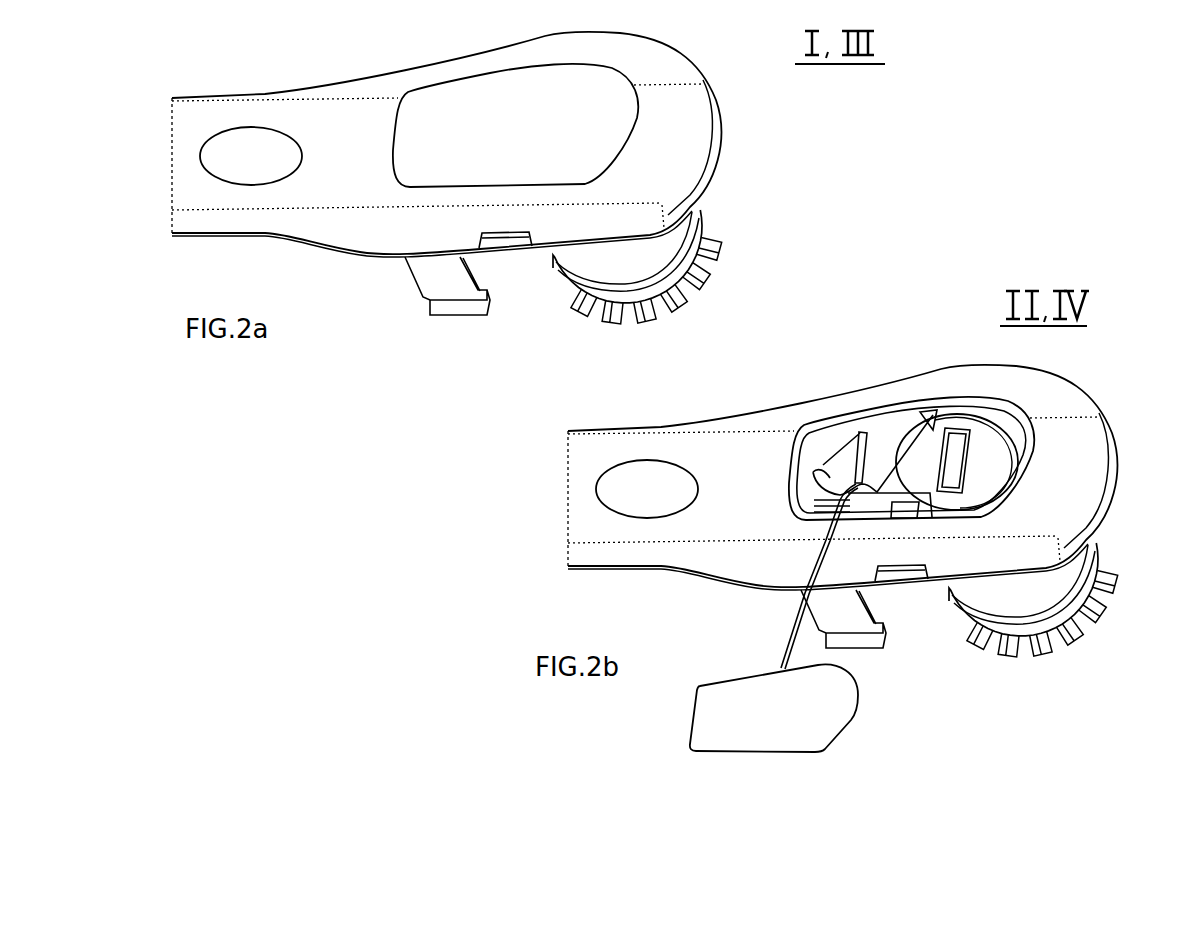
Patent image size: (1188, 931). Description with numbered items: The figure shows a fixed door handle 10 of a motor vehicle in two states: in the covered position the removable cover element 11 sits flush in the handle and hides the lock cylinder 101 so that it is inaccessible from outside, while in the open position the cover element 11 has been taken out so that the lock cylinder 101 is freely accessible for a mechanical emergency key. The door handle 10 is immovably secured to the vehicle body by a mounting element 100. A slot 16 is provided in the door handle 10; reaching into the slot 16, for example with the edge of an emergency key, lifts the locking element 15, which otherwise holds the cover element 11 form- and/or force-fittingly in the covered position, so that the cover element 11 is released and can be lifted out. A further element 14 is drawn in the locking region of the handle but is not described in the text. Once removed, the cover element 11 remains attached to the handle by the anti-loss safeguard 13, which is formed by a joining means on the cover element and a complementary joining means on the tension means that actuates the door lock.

In FIG. 2A, the door handle 10 is at (680, 130).
In FIG. 2B, the door handle 10 is at (1063, 440).
In FIG. 2A, the cover element 11 is at (458, 105).
In FIG. 2B, the cover element 11 is at (748, 700).
In FIG. 2B, the anti-loss safeguard 13 is at (792, 637).
In FIG. 2B, the ramp guide 14 is at (823, 466).
In FIG. 2B, the locking element 15 is at (818, 493).
In FIG. 2A, the slot 16 is at (500, 246).
In FIG. 2B, the slot 16 is at (896, 579).
In FIG. 2A, the mounting element 100 is at (427, 278).
In FIG. 2B, the mounting element 100 is at (847, 615).
In FIG. 2A, the lock cylinder 101 is at (663, 248).
In FIG. 2B, the lock cylinder 101 is at (1037, 588).